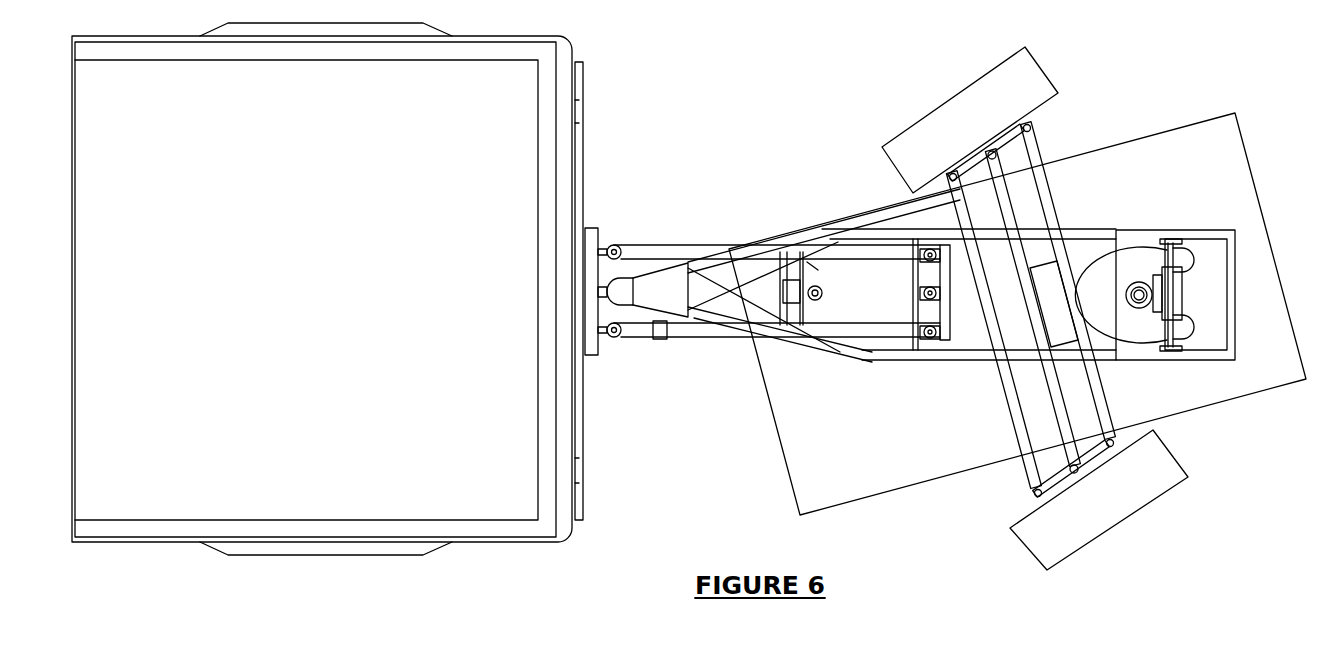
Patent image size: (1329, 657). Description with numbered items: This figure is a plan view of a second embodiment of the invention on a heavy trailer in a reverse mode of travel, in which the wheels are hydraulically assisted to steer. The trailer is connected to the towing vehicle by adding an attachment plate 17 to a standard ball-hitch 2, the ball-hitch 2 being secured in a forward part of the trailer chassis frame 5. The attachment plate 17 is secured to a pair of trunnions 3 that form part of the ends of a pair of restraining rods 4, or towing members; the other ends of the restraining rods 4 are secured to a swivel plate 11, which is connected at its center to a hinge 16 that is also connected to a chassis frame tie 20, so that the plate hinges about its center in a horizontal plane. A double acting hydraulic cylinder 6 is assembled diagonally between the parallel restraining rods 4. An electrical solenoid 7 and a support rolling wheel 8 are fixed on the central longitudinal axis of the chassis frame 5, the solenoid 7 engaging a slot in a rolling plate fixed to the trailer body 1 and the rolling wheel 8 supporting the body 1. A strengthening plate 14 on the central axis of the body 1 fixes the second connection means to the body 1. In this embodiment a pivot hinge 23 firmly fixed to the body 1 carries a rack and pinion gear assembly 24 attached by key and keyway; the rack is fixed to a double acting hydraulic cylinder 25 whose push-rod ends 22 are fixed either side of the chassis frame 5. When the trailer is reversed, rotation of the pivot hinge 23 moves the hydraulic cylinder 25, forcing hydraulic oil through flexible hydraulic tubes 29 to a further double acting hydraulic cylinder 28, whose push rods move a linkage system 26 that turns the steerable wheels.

The trailer body 1 is at (1241, 130).
The ball-hitch 2 is at (620, 290).
The trunnions 3 is at (614, 245).
The restraining rods 4 is at (668, 245).
The chassis frame 5 is at (897, 228).
The double acting hydraulic cylinder 6 is at (752, 330).
The electrical solenoid 7 is at (822, 296).
The support rolling wheel 8 is at (800, 265).
The swivel plate 11 is at (950, 310).
The strengthening plate 14 is at (1140, 230).
The hinge 16 is at (930, 294).
The attachment plate 17 is at (598, 284).
The chassis frame tie 20 is at (903, 275).
The push-rod ends 22 is at (1170, 237).
The pivot hinge 23 is at (1152, 295).
The rack & pinion gear assembly 24 is at (1148, 306).
The double acting hydraulic cylinder 25 is at (1182, 285).
The linkage system 26 is at (1022, 150).
The further double acting hydraulic cylinder 28 is at (1092, 288).
The flexible hydraulic tubes 29 is at (1193, 247).